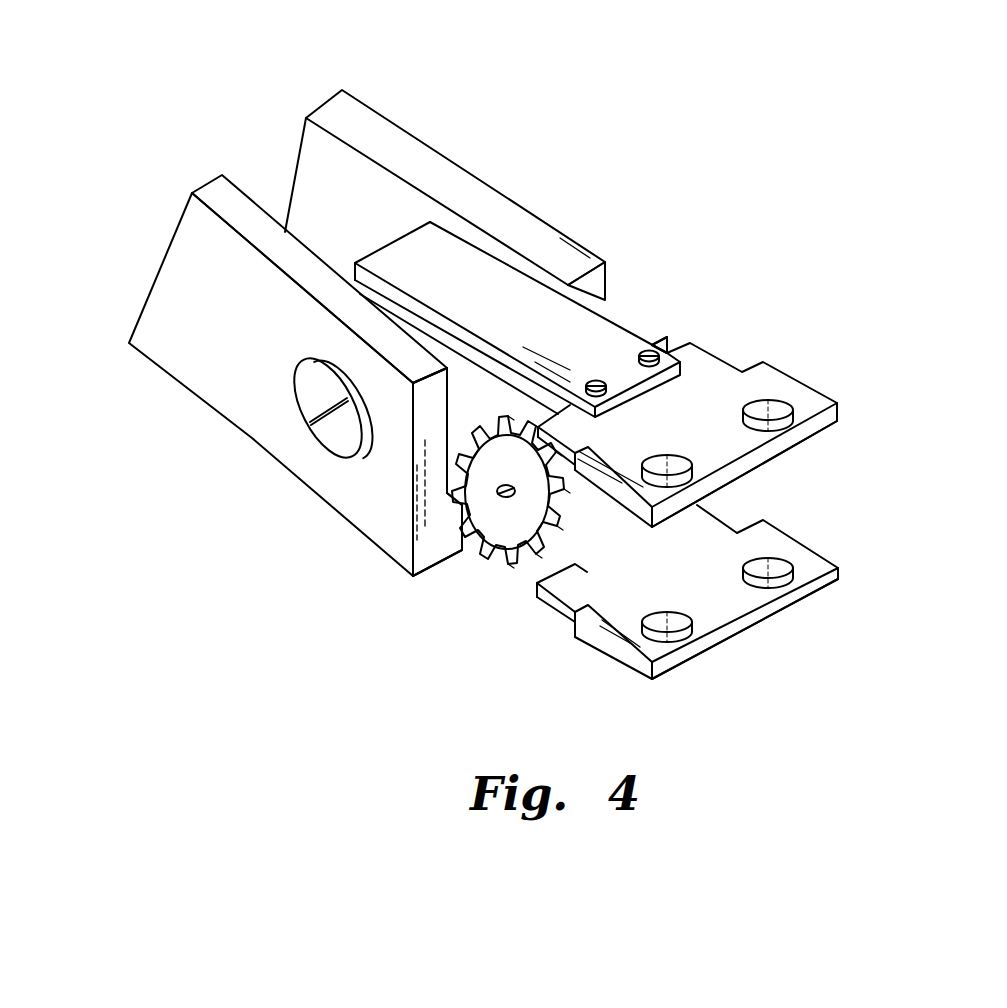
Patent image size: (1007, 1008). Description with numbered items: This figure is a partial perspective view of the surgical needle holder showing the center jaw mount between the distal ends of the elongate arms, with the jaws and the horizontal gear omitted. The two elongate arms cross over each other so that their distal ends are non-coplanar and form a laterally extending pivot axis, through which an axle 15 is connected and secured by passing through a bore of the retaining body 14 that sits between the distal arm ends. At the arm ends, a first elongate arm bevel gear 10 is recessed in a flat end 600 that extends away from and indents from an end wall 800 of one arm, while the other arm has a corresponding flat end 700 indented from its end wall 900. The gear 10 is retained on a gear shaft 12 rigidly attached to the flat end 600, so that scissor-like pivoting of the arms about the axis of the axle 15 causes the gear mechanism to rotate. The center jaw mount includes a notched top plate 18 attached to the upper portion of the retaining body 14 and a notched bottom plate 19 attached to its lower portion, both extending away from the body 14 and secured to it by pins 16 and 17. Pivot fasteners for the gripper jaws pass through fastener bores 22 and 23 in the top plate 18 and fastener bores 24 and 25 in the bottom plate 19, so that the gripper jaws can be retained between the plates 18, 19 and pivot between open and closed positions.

The first elongate arm bevel gear 10 is at (463, 548).
The end wall 800 is at (425, 548).
The axle 15 is at (335, 433).
The gear shaft 12 is at (502, 500).
The flat end 600 is at (420, 192).
The retaining body 14 is at (477, 270).
The end wall 900 is at (596, 380).
The pin 16 is at (649, 350).
The pin 17 is at (648, 345).
The flat end 700 is at (668, 338).
The fastener bore 22 is at (683, 455).
The fastener bore 23 is at (780, 410).
The notched top plate 18 is at (735, 447).
The notched bottom plate 19 is at (720, 605).
The fastener bore 25 is at (780, 572).
The fastener bore 24 is at (700, 625).